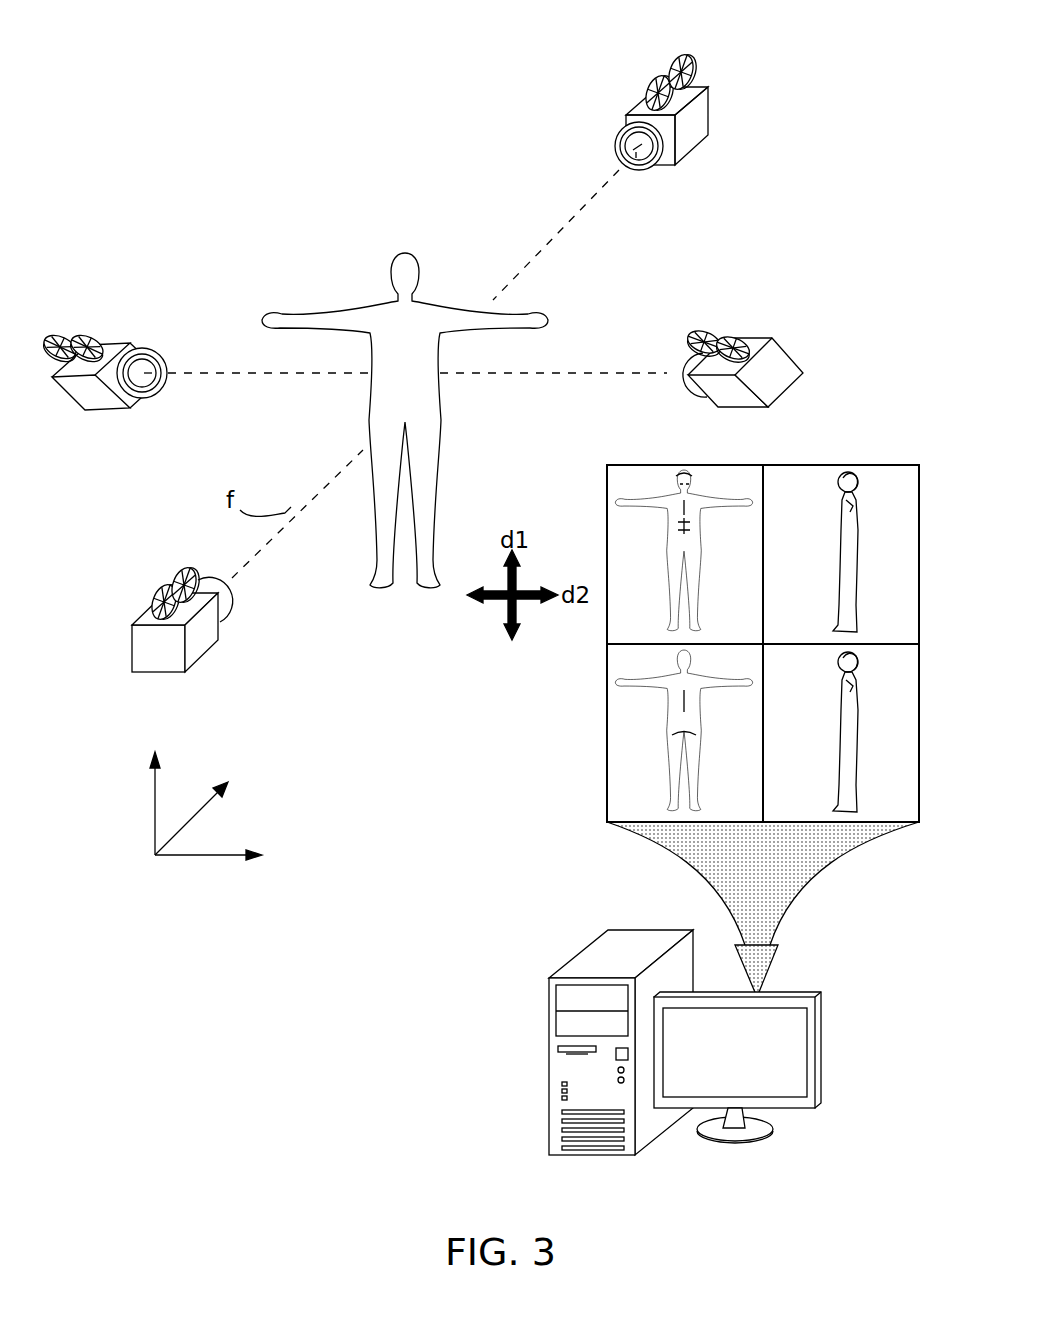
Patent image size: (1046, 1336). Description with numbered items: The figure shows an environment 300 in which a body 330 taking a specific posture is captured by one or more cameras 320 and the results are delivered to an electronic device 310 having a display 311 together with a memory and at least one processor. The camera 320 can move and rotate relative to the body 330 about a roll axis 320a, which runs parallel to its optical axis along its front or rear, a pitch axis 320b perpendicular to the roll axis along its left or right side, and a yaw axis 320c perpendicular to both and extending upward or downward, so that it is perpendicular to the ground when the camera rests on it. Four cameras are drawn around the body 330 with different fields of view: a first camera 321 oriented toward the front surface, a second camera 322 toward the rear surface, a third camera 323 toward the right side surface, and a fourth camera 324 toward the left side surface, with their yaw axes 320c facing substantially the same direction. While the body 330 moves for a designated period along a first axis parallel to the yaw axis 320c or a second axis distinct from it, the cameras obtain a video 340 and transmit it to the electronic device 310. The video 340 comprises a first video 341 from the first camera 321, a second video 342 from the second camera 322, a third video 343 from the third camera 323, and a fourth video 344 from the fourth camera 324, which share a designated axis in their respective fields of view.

The environment 300 is at (284, 52).
The electronic device 310 is at (725, 1042).
The display 311 is at (787, 1052).
The camera 320 is at (202, 953).
The roll axis 320a is at (214, 818).
The pitch axis 320b is at (213, 867).
The yaw axis 320c is at (132, 803).
The first camera 321 is at (132, 613).
The second camera 322 is at (697, 88).
The third camera 323 is at (113, 343).
The fourth camera 324 is at (760, 338).
The body 330 is at (403, 250).
The video 340 is at (350, 953).
The first video 341 is at (607, 553).
The second video 342 is at (607, 736).
The third video 343 is at (919, 553).
The fourth video 344 is at (919, 736).